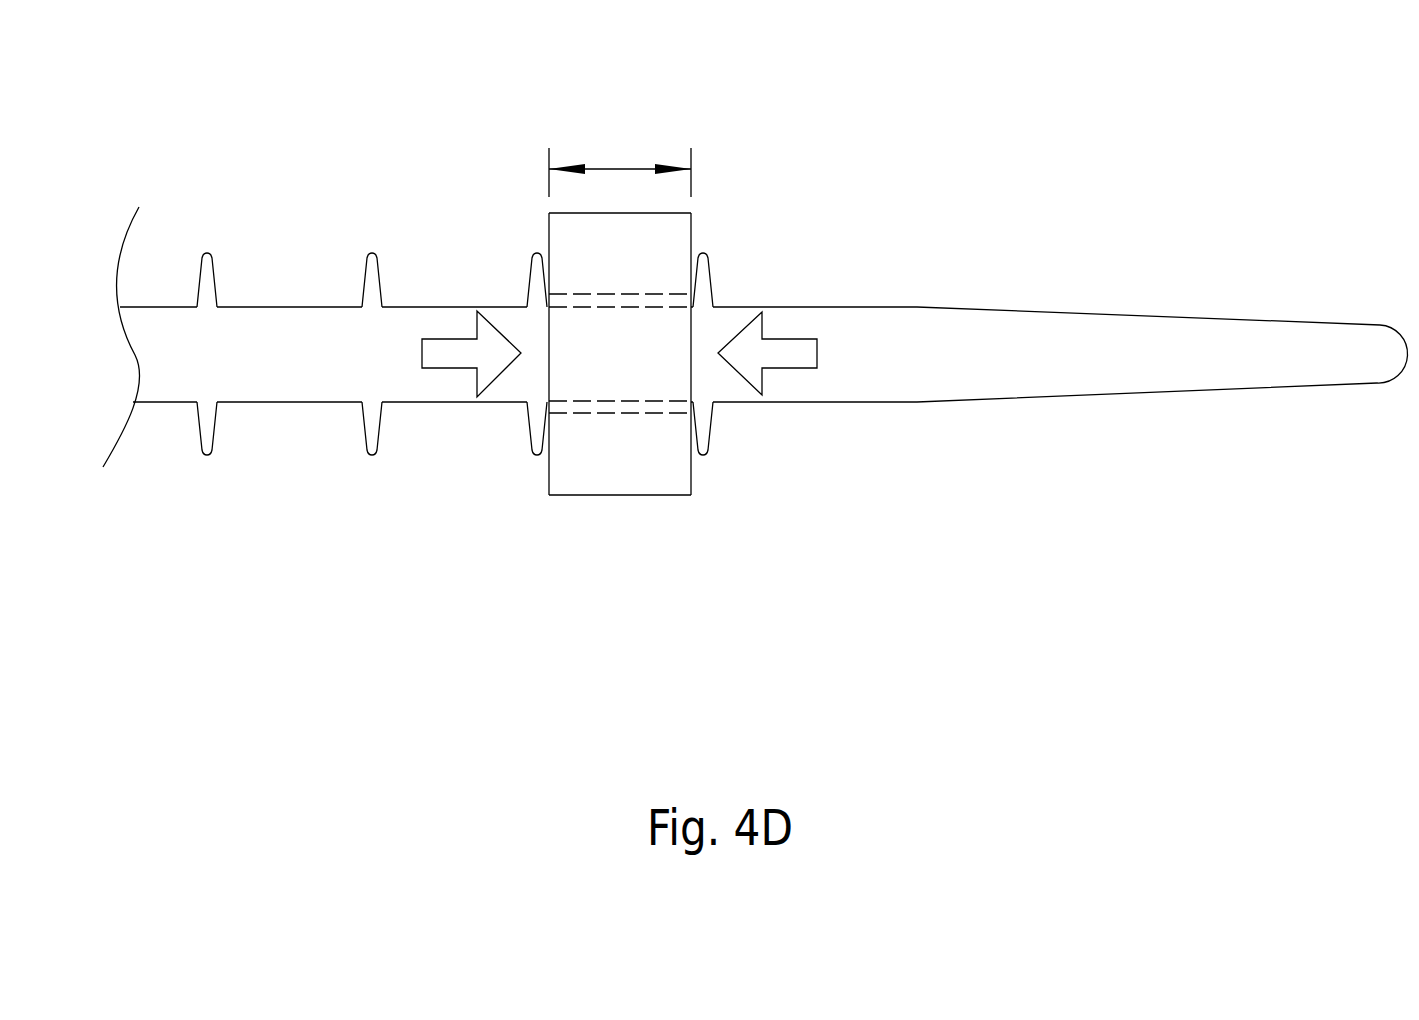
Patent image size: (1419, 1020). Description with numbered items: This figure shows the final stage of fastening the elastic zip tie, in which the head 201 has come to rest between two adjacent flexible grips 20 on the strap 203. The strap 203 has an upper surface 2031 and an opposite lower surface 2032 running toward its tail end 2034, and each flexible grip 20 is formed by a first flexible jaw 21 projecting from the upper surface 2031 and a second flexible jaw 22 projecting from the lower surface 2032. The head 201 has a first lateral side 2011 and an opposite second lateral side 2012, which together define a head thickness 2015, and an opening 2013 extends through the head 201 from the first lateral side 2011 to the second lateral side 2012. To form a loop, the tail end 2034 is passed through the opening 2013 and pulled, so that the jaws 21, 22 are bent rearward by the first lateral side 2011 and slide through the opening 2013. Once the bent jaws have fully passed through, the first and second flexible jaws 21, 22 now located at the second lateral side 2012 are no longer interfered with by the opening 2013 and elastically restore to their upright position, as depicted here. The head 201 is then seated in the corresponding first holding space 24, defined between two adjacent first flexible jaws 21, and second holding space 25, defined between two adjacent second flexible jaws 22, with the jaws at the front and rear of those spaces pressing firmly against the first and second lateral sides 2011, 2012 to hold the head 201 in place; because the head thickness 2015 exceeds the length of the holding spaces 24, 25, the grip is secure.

The flexible grip 20 is at (395, 390).
The first flexible jaw 21 is at (533, 255).
The second flexible jaw 22 is at (702, 438).
The first holding space 24 is at (287, 252).
The second holding space 25 is at (295, 482).
The head 201 is at (658, 367).
The first lateral side 2011 is at (547, 213).
The second lateral side 2012 is at (692, 213).
The opening 2013 is at (668, 302).
The head thickness 2015 is at (620, 167).
The strap 203 is at (1066, 331).
The upper surface 2031 is at (1147, 317).
The lower surface 2032 is at (1040, 397).
The tail end 2034 is at (1412, 357).